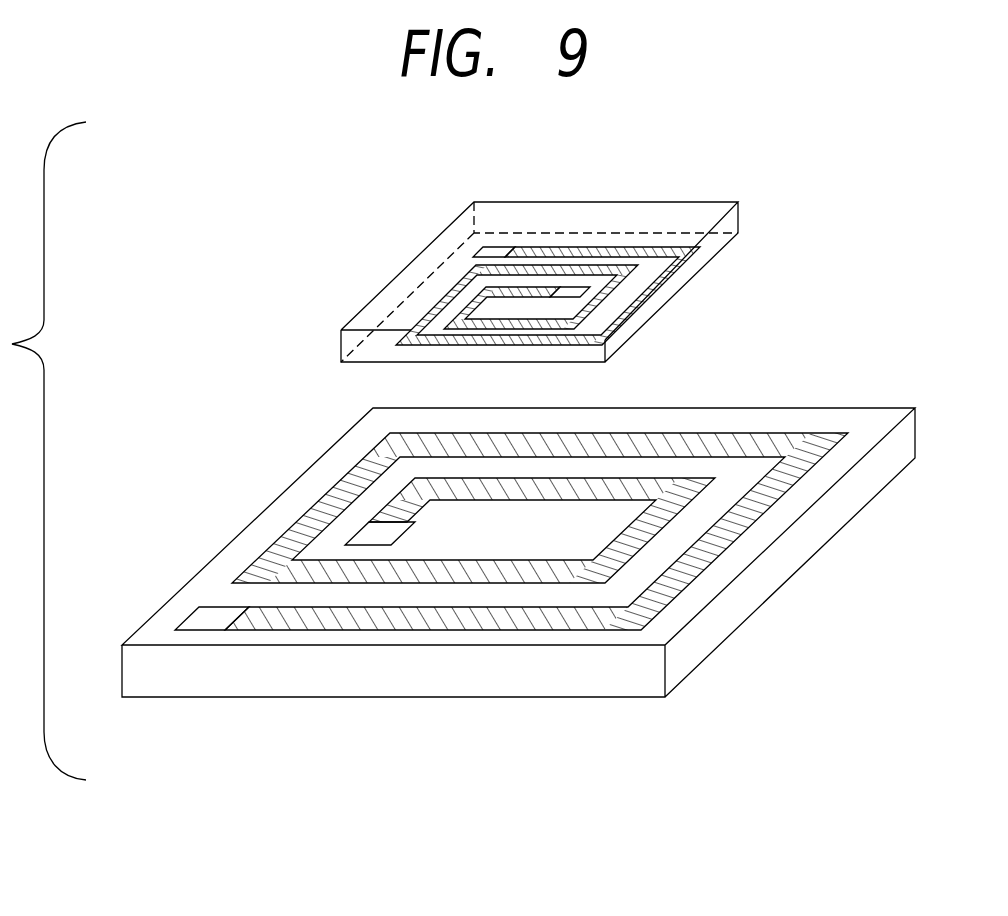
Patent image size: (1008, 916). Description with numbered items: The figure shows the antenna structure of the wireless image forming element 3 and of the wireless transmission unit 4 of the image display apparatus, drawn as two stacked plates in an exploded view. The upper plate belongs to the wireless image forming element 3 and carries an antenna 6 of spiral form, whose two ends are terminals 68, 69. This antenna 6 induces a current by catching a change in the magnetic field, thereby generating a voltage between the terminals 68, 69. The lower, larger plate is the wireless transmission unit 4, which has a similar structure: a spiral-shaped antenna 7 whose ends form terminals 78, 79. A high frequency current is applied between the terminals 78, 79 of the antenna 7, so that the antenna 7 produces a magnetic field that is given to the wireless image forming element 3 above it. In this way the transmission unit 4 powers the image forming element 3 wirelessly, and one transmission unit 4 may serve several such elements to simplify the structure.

The wireless image forming element 3 is at (663, 300).
The wireless transmission unit 4 is at (778, 566).
The antenna 6 is at (447, 287).
The antenna 7 is at (275, 553).
The terminal 68 is at (505, 252).
The terminal 69 is at (572, 290).
The terminal 78 is at (370, 535).
The terminal 79 is at (205, 620).